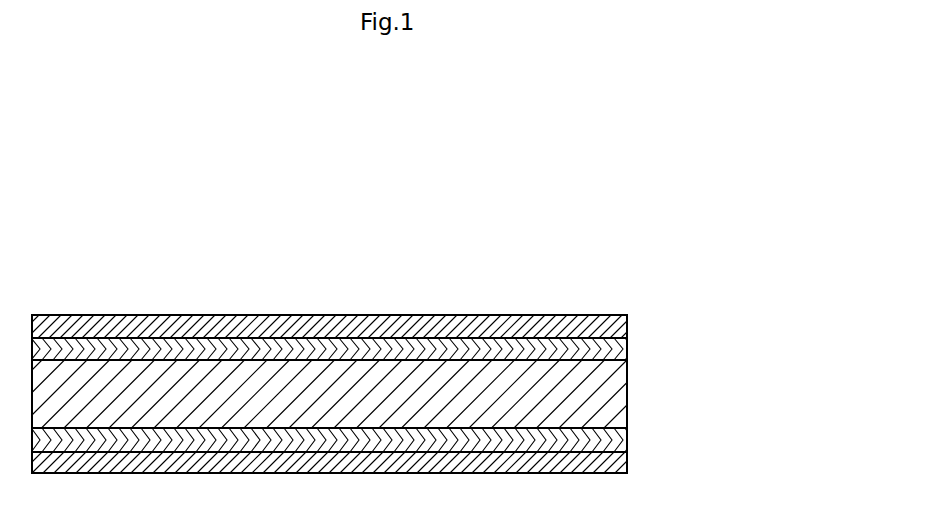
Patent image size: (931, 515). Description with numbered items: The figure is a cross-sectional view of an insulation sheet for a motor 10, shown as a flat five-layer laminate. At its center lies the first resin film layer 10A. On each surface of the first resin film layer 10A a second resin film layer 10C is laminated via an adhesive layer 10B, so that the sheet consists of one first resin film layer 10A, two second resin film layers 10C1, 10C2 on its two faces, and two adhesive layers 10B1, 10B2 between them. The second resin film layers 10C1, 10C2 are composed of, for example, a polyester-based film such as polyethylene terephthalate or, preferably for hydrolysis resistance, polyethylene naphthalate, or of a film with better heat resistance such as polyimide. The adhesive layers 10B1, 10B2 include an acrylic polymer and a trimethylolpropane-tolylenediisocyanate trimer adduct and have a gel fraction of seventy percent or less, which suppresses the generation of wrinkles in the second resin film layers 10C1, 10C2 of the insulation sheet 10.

The insulation sheet for a motor 10 is at (593, 243).
The first resin film layer 10A is at (627, 395).
The adhesive layer 10B is at (407, 382).
The first adhesive layer 10B1 is at (627, 351).
The second adhesive layer 10B2 is at (627, 442).
The second resin film layer 10C is at (407, 380).
The first second-resin film layer 10C1 is at (627, 325).
The second second-resin film layer 10C2 is at (627, 465).